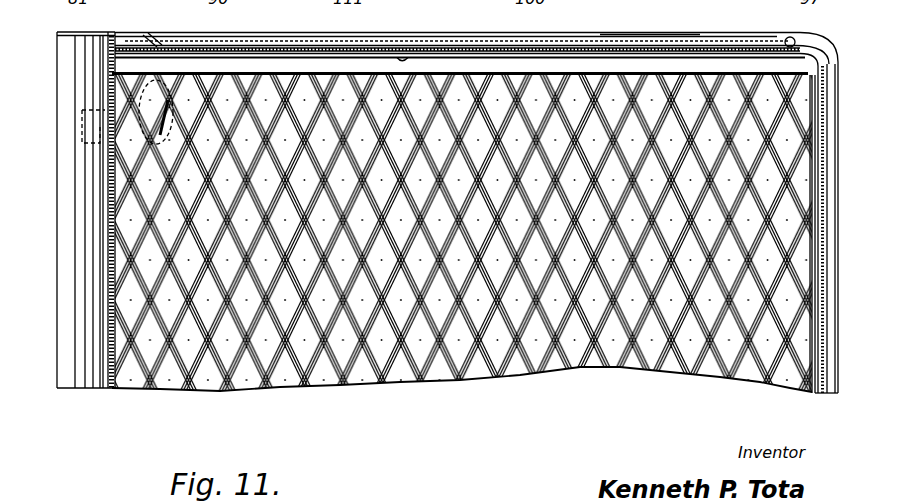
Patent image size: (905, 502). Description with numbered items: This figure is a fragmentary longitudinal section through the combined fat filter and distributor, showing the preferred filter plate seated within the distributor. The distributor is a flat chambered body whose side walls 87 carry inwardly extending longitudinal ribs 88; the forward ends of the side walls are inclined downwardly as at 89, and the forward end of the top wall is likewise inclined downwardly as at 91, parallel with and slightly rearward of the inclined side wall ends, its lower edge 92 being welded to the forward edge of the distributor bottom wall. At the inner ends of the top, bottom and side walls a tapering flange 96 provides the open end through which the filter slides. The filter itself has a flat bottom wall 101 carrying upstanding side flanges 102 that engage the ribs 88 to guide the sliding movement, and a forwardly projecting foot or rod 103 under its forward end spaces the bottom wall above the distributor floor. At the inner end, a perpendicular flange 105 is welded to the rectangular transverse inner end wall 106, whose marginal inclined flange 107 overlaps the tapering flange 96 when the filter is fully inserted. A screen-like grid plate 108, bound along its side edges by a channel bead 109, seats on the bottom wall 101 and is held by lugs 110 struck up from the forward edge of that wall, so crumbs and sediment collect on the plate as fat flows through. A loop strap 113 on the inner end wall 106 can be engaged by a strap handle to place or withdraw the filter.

The side walls 87 is at (700, 35).
The longitudinal ribs 88 is at (276, 44).
The downwardly inclined forward ends of side walls 89 is at (80, 32).
The downwardly inclined forward end of top wall 91 is at (90, 60).
The lower edge 92 is at (66, 388).
The tapering flange 96 is at (791, 37).
The bottom wall 101 is at (655, 17).
The side flanges 102 is at (422, 56).
The foot or rod 103 is at (160, 45).
The perpendicular flange 105 is at (818, 258).
The inner end wall 106 is at (795, 388).
The inclined flange 107 is at (830, 46).
The grid plate 108 is at (587, 104).
The channel bead 109 is at (334, 66).
The lugs 110 is at (150, 337).
The loop strap 113 is at (815, 392).